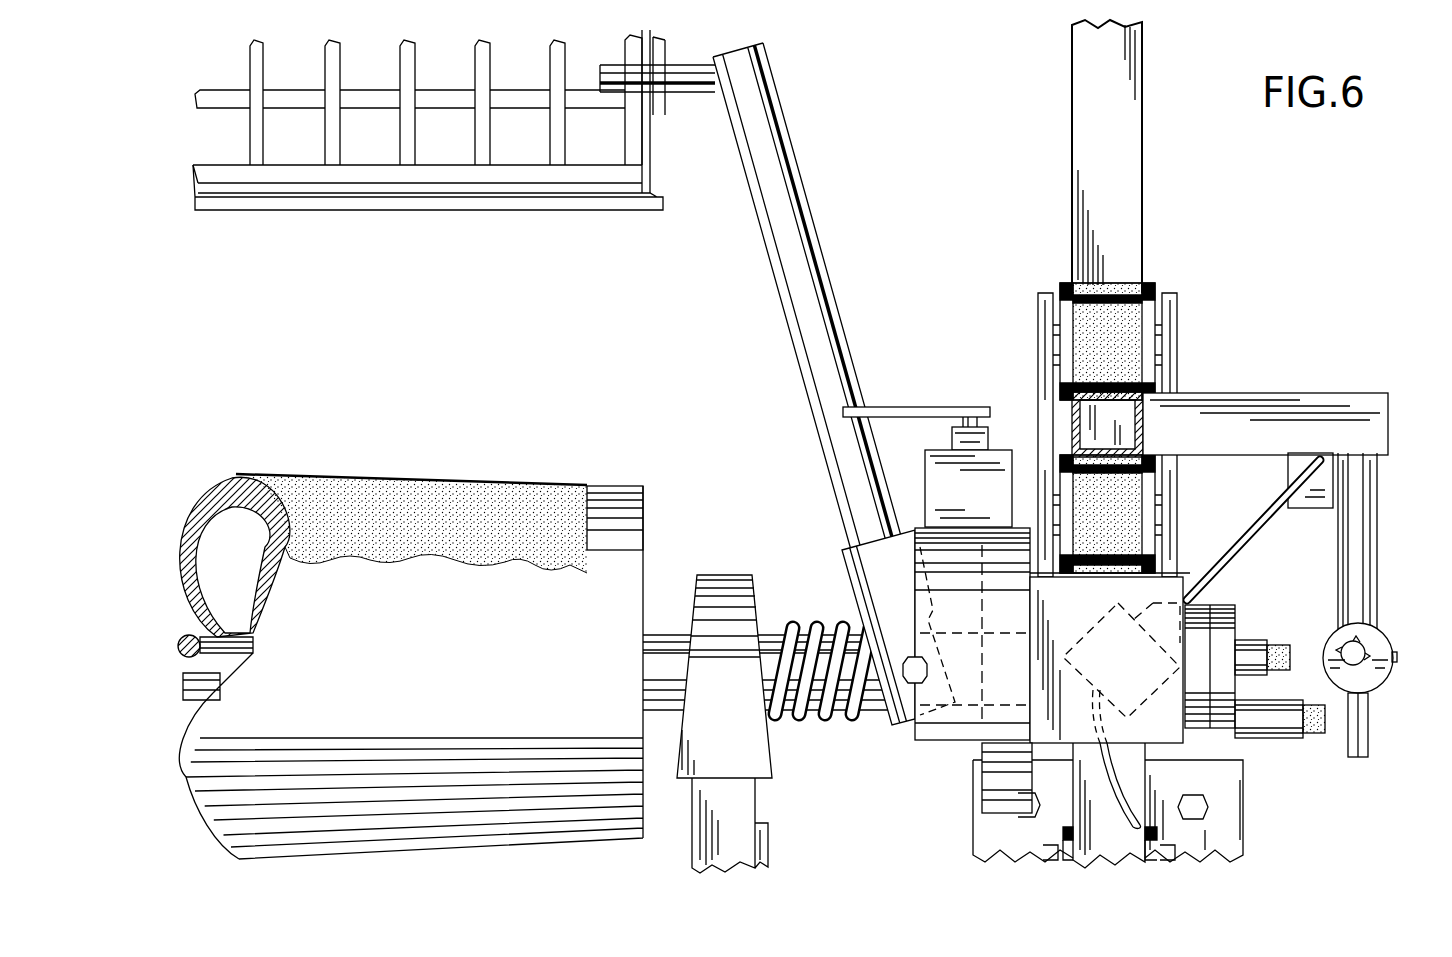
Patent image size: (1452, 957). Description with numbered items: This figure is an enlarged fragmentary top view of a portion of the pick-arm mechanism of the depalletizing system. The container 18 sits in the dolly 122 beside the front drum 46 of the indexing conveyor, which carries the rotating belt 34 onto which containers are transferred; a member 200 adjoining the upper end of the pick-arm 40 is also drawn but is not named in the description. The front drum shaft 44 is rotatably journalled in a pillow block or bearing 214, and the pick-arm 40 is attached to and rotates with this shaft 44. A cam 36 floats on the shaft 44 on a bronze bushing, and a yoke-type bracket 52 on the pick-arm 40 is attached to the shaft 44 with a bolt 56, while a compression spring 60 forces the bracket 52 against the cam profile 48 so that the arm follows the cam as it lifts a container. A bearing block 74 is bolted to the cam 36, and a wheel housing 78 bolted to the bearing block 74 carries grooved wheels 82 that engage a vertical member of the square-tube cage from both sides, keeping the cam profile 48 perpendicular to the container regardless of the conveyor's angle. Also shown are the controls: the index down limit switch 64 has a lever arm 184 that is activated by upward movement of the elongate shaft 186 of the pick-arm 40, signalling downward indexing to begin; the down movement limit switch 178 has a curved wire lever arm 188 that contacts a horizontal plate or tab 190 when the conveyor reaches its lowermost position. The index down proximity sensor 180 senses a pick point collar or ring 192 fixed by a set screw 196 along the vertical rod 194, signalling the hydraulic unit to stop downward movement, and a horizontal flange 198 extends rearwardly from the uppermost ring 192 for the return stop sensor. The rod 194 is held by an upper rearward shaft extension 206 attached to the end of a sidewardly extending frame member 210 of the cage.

The container 18 is at (500, 210).
The dolly 122 is at (353, 210).
The support bar 200 is at (684, 68).
The pick-arm 40 is at (815, 296).
The elongate shaft 186 is at (842, 310).
The lever arm 184 is at (893, 407).
The first limit switch 64 is at (940, 477).
The grooved wheels 82 is at (1150, 290).
The wheel housing 78 is at (1178, 335).
The sidewardly extending frame member 210 is at (1300, 398).
The horizontal plate or tab 190 is at (1325, 478).
The curved wire lever arm 188 is at (1253, 540).
The upper rearward shaft extension 206 is at (1350, 563).
The index down proximity sensor 180 is at (1260, 657).
The pick point collar or ring 192 is at (1385, 638).
The set screw 196 is at (1403, 600).
The vertical rod, pipe or tube 194 is at (1375, 685).
The horizontal extension or flange 198 is at (1370, 718).
The down movement limit switch 178 is at (1078, 643).
The bearing block 74 is at (1171, 685).
The front drum 46 is at (223, 490).
The rotating belt 34 is at (452, 478).
The shaft 44 is at (212, 635).
The pillow block or bearing 214 is at (710, 573).
The yoke-type bracket 52 is at (835, 568).
The compression spring 60 is at (830, 720).
The bolt 56 is at (906, 722).
The cam 36 is at (963, 718).
The cam profile 48 is at (982, 790).